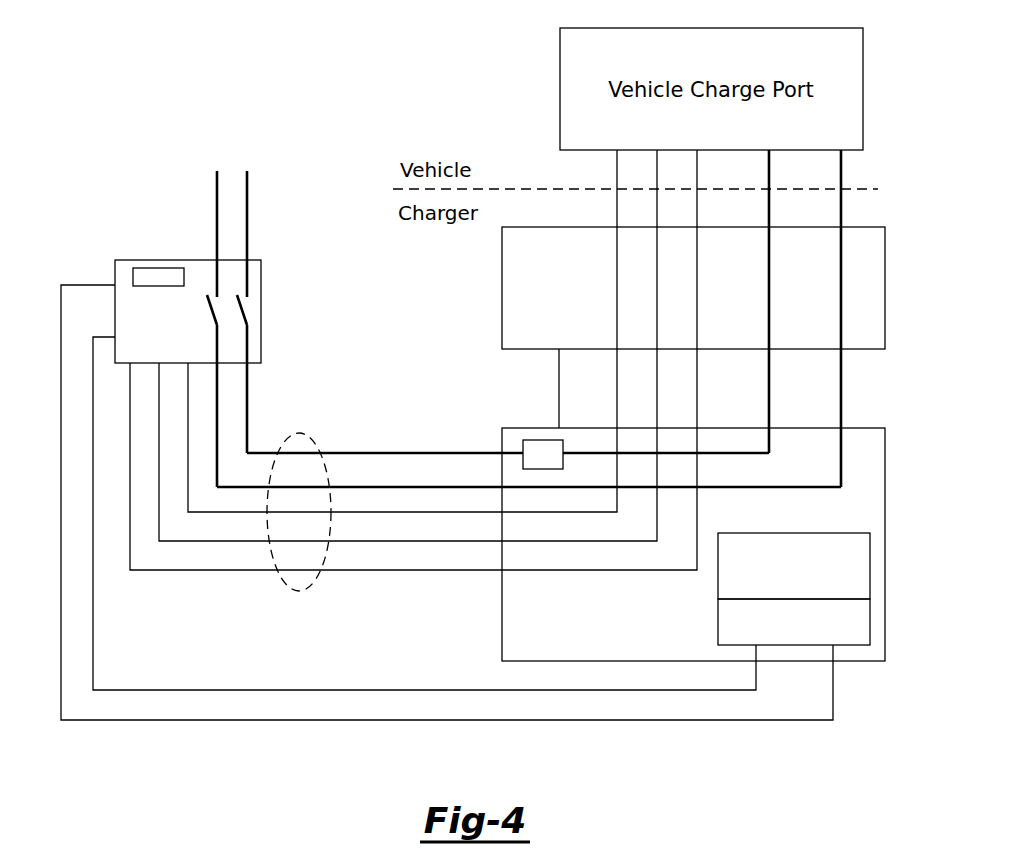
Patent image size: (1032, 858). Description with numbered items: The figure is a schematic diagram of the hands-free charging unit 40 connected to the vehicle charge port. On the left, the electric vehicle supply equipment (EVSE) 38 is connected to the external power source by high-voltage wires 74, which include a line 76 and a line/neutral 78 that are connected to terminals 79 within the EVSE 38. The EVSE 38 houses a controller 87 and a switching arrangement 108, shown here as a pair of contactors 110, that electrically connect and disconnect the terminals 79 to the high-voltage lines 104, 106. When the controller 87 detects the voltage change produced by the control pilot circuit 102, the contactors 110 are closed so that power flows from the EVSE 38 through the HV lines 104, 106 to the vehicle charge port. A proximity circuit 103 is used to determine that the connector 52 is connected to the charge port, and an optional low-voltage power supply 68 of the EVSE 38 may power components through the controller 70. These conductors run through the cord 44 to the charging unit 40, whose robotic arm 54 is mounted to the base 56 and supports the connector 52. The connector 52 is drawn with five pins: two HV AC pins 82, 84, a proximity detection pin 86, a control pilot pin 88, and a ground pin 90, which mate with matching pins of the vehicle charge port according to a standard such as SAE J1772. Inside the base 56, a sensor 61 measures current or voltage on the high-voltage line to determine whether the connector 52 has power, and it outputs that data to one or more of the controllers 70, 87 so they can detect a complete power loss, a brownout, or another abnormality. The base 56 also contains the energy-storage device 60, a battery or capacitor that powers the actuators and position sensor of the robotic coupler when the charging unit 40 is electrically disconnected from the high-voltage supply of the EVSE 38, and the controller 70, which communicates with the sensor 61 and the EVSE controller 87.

The electric vehicle supply equipment (EVSE) 38 is at (120, 275).
The EVSE controller 87 is at (152, 268).
The switching arrangement 108 is at (192, 332).
The high-voltage wires 74 is at (239, 312).
The line/neutral 78 is at (217, 197).
The line 76 is at (247, 233).
The terminals 79 is at (258, 302).
The contactors 110 is at (248, 312).
The high-voltage line 104 is at (435, 453).
The high-voltage line 106 is at (402, 487).
The proximity circuit 103 is at (238, 512).
The control pilot circuit 102 is at (182, 541).
The ground pin 90 is at (697, 200).
The control pilot pin 88 is at (617, 162).
The proximity detection pin 86 is at (617, 205).
The HV AC pin 84 is at (769, 160).
The HV AC pin 82 is at (841, 203).
The low-voltage power supply 68 is at (158, 674).
The cord 44 is at (300, 433).
The connector 52 is at (502, 288).
The robotic arm 54 is at (559, 390).
The charging unit 40 is at (699, 521).
The base 56 is at (858, 428).
The sensor 61 is at (523, 452).
The energy-storage device 60 is at (870, 565).
The controller 70 is at (870, 620).